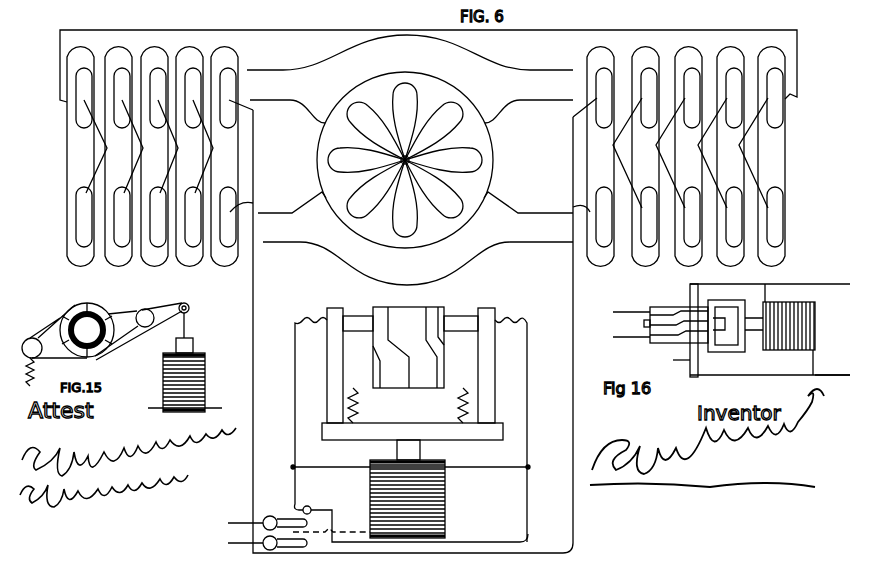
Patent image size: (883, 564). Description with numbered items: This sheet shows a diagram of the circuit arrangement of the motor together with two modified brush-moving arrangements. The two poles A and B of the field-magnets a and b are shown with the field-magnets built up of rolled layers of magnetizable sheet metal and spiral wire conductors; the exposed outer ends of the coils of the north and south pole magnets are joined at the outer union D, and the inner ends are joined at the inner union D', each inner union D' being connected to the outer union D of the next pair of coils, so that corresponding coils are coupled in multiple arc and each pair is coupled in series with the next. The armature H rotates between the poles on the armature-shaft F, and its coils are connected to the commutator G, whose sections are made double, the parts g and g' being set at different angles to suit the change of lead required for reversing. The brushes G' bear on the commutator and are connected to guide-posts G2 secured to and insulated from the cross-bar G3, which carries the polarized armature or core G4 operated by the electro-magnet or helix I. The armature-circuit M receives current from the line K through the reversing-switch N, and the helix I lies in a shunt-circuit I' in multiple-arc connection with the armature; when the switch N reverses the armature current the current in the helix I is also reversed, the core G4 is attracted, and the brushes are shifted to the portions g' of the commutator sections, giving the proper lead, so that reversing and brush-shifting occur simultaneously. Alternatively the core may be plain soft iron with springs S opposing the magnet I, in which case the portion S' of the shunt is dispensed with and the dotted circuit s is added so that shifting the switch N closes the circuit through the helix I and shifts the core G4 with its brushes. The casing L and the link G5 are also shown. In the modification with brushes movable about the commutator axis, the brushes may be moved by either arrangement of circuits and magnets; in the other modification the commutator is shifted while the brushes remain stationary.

In FIG. 6, the field-magnet a is at (418, 66).
In FIG. 6, the field-magnet b is at (361, 239).
In FIG. 6, the outer union of magnet-coils D is at (144, 157).
In FIG. 6, the inner union of magnet-coils D' is at (434, 157).
In FIG. 6, the pole of the field-magnets A is at (410, 79).
In FIG. 6, the pole of the field-magnets B is at (415, 238).
In FIG. 6, the armature H is at (405, 160).
In FIG. 6, the brush G' is at (410, 313).
In FIG. 15, the brush G' is at (105, 341).
In FIG. 6, the commutator G is at (408, 347).
In FIG. 15, the commutator G is at (87, 323).
In FIG. 16, the commutator G is at (664, 336).
In FIG. 6, the commutator section g is at (391, 347).
In FIG. 6, the commutator section portion g' is at (431, 347).
In FIG. 6, the guide-post G2 is at (413, 365).
In FIG. 16, the guide-post G2 is at (676, 328).
In FIG. 6, the spring S is at (408, 405).
In FIG. 6, the cross-bar G3 is at (412, 422).
In FIG. 6, the polarized armature or core G4 is at (408, 450).
In FIG. 15, the polarized armature or core G4 is at (198, 333).
In FIG. 6, the electro-magnet or helix I is at (412, 499).
In FIG. 15, the electro-magnet or helix I is at (176, 382).
In FIG. 16, the electro-magnet or helix I is at (795, 326).
In FIG. 6, the shunt-circuit I' is at (506, 430).
In FIG. 15, the shunt-circuit I' is at (186, 400).
In FIG. 16, the shunt-circuit I' is at (832, 363).
In FIG. 6, the portion of the shunt S' is at (410, 458).
In FIG. 6, the armature-circuit M is at (401, 430).
In FIG. 16, the armature-circuit M is at (770, 338).
In FIG. 6, the reversing-switch N is at (291, 507).
In FIG. 6, the dotted circuit s is at (331, 526).
In FIG. 6, the line K is at (256, 530).
In FIG. 6, the casing frame L is at (411, 331).
In FIG. 16, the armature link G5 is at (735, 326).
In FIG. 16, the armature-shaft F is at (631, 324).